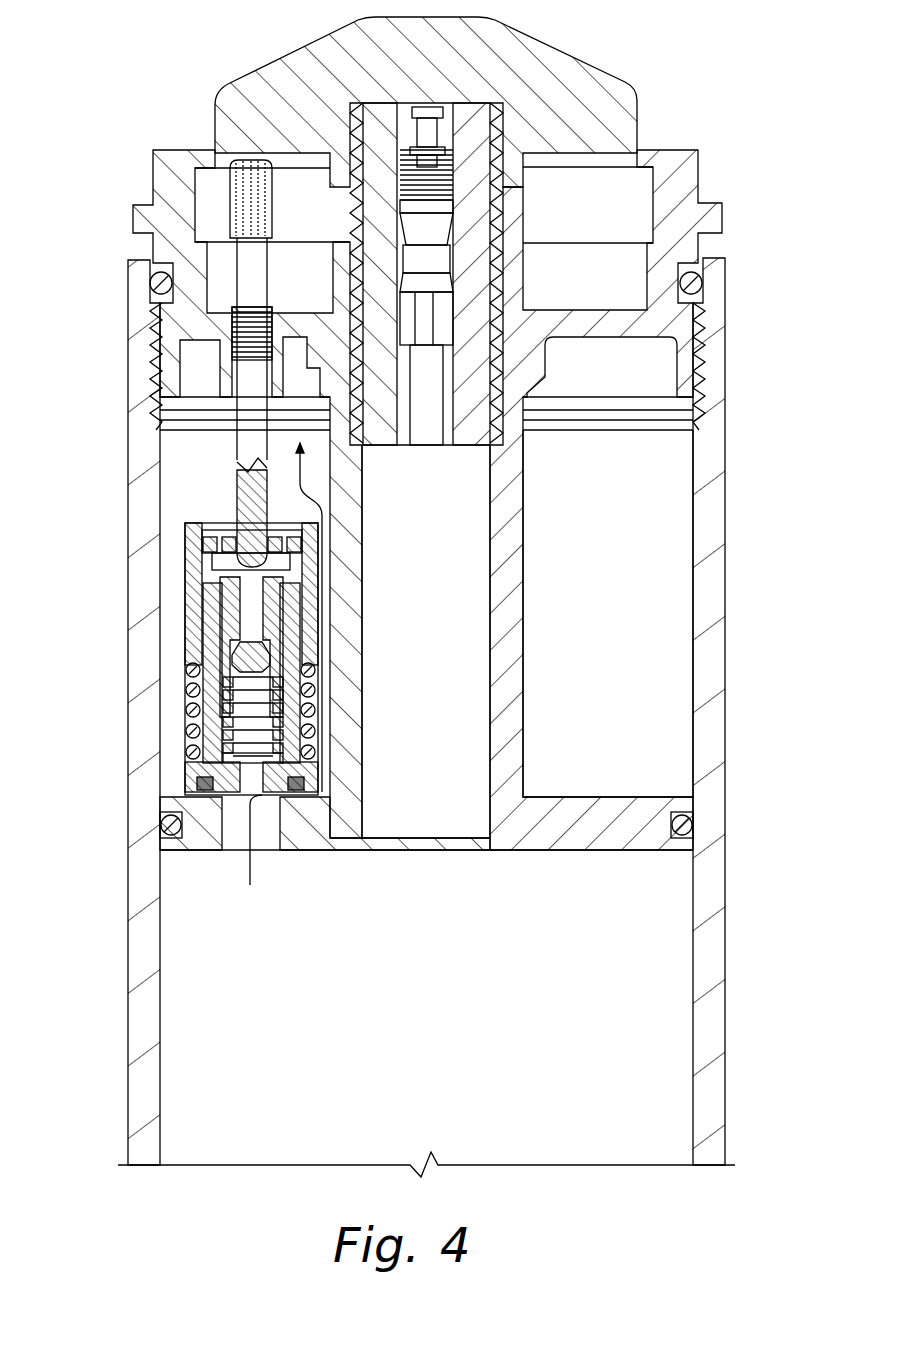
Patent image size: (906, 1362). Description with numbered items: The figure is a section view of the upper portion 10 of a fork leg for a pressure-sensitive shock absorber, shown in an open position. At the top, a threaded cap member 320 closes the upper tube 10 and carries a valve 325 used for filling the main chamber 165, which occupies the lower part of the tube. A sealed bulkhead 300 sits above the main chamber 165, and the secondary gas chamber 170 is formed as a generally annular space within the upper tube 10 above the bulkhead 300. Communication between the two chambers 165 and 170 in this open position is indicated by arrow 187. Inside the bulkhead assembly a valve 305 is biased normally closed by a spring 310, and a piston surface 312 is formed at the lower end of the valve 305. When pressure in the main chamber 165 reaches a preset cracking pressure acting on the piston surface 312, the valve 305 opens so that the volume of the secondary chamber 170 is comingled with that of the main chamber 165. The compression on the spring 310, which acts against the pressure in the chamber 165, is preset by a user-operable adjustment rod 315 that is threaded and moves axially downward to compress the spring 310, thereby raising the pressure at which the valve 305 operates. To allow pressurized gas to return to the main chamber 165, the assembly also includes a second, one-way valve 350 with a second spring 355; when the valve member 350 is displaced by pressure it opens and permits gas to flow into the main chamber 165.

The upper portion of fork leg 10 is at (725, 970).
The main chamber 165 is at (441, 1043).
The secondary gas chamber 170 is at (622, 602).
The arrow 187 is at (312, 496).
The sealed bulkhead 300 is at (585, 843).
The valve 305 is at (183, 765).
The spring 310 is at (183, 685).
The piston surface 312 is at (183, 782).
The adjustment rod 315 is at (230, 197).
The threaded cap member 320 is at (578, 70).
The valve 325 is at (502, 204).
The one way valve 350 is at (183, 653).
The second spring 355 is at (183, 720).